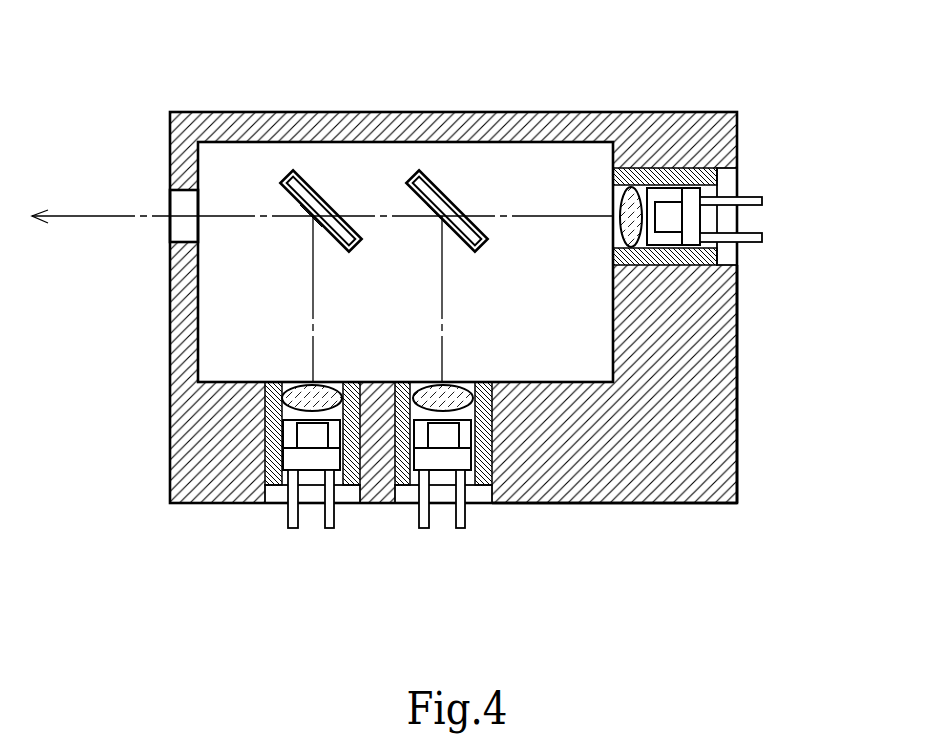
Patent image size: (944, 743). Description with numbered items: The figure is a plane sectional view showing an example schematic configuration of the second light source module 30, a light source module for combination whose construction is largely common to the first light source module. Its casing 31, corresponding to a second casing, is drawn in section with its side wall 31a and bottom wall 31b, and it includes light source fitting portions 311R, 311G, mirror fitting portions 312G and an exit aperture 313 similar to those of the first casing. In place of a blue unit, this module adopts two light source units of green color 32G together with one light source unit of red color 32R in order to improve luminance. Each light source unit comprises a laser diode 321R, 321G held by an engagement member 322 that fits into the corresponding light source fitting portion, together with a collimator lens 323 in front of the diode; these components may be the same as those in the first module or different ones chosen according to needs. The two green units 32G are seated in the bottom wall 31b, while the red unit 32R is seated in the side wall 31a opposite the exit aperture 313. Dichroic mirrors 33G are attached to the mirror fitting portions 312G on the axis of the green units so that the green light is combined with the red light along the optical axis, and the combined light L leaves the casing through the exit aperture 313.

The second light source module 30 is at (384, 96).
The casing 31 is at (567, 112).
The side wall of housing 31a is at (717, 350).
The bottom wall of housing 31b is at (632, 492).
The exit aperture 313 is at (167, 232).
The light / optical axis L is at (95, 213).
The engagement member 322 is at (667, 167).
The collimator lens 323 is at (622, 204).
The light source fitting portion 311R is at (727, 173).
The light source fitting portion 311G is at (277, 497).
The laser diode 321R is at (695, 217).
The laser diode 321G is at (312, 460).
The light source unit of red color 32R is at (606, 236).
The light source unit of green color 32G is at (307, 380).
The mirror fitting portion 312G is at (296, 172).
The dichroic mirror 33G is at (308, 214).